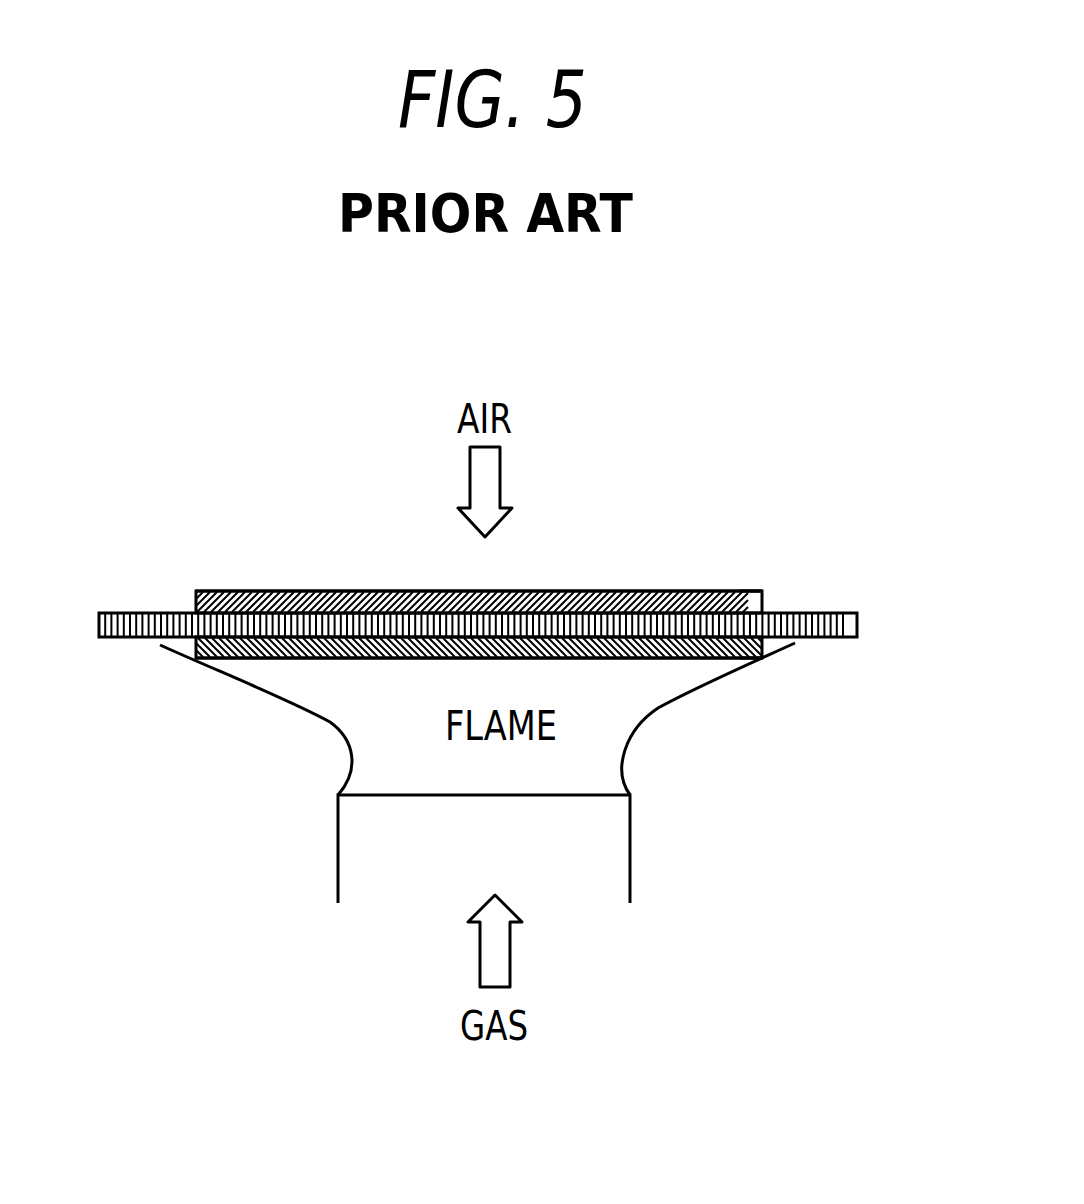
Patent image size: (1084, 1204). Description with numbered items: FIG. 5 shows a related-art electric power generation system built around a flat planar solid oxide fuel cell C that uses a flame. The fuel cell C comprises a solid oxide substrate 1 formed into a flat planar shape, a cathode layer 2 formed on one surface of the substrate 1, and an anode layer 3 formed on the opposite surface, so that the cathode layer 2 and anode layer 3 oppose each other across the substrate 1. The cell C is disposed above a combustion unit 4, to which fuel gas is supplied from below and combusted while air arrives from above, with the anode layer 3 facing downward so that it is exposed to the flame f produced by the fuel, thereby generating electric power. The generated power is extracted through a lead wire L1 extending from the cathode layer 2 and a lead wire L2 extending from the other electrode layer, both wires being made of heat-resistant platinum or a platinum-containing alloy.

The solid oxide substrate 1 is at (150, 612).
The cathode layer 2 is at (297, 590).
The anode layer 3 is at (285, 658).
The combustion unit 4 is at (630, 846).
The solid oxide fuel cell C is at (634, 556).
The lead wire L1 is at (762, 591).
The lead wire L2 is at (762, 658).
The flame f is at (658, 708).